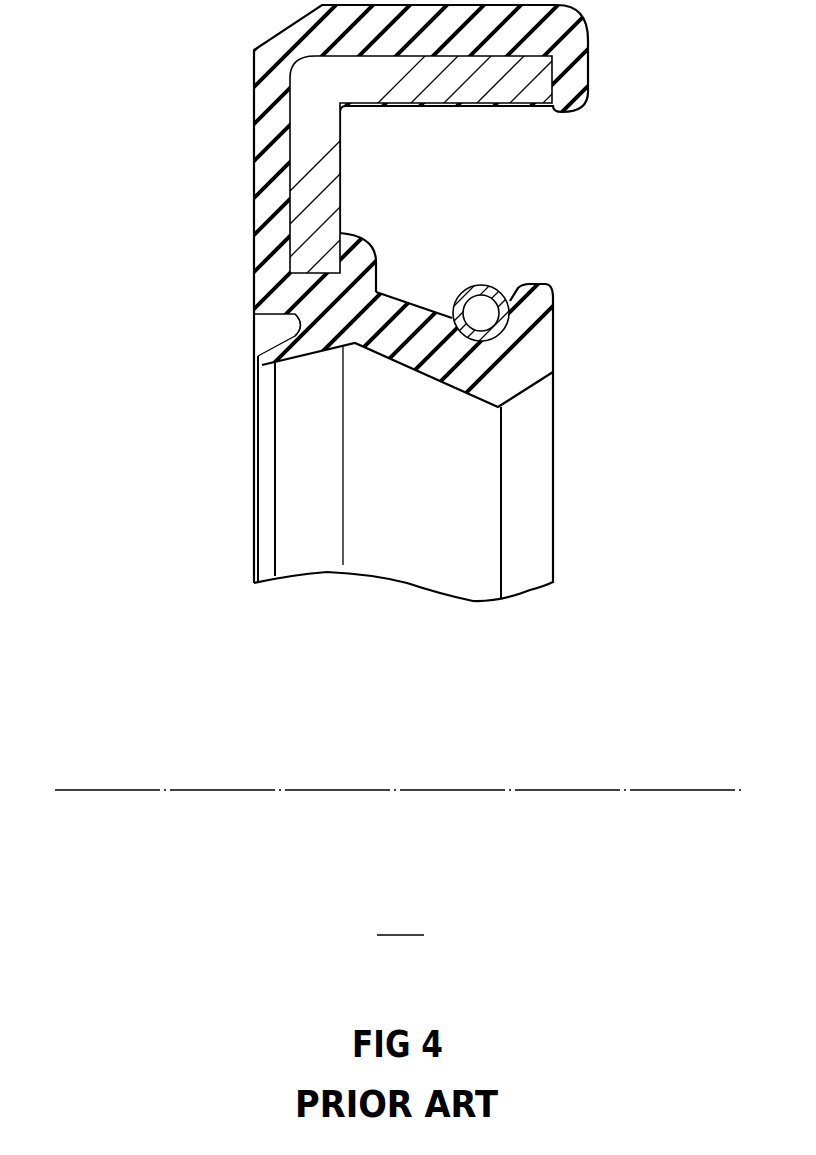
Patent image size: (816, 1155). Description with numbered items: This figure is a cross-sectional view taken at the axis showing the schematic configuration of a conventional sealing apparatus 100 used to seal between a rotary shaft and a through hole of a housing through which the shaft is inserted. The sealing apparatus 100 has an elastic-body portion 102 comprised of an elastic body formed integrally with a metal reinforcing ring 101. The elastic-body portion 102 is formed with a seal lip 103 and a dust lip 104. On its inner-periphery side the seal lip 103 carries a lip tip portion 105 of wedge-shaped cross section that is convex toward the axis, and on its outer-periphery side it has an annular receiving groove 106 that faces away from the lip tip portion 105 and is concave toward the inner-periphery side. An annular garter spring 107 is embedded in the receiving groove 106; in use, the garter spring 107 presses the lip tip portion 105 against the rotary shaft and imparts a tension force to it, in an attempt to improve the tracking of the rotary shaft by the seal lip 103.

The conventional sealing apparatus 100 is at (400, 917).
The reinforcing ring 101 is at (302, 110).
The elastic-body portion 102 is at (253, 182).
The seal lip 103 is at (375, 364).
The dust lip 104 is at (265, 360).
The lip tip portion 105 is at (505, 392).
The receiving groove 106 is at (457, 300).
The garter spring 107 is at (481, 284).